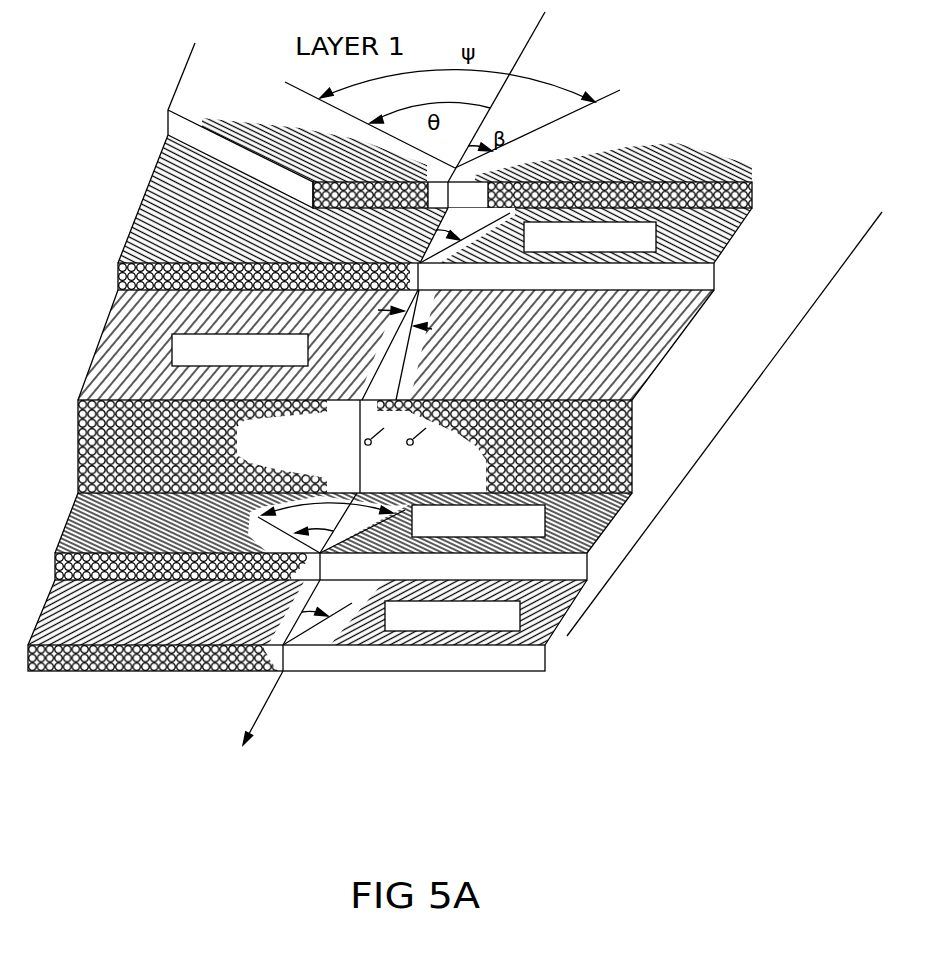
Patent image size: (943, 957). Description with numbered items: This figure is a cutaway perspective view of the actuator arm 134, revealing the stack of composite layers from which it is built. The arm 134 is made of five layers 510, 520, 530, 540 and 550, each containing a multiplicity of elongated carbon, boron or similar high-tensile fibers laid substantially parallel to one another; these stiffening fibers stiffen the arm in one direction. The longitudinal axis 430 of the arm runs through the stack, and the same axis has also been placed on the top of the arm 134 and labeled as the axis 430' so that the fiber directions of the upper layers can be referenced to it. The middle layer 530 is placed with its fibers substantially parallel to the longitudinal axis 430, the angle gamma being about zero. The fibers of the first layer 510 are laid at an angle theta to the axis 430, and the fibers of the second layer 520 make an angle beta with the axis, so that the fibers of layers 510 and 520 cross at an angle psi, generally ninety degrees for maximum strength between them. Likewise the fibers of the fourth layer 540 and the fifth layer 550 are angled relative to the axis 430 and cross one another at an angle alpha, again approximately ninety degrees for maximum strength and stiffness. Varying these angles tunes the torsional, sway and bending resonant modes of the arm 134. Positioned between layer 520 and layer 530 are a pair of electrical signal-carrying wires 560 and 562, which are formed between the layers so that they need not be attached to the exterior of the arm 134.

The first layer 510 is at (290, 113).
The second layer 520 is at (610, 291).
The middle layer 530 is at (328, 459).
The fourth layer 540 is at (476, 581).
The fifth layer 550 is at (431, 673).
The signal-carrying wire 560 is at (388, 434).
The signal-carrying wire 562 is at (430, 434).
The longitudinal axis 430 is at (294, 496).
The longitudinal axis (placed on top of arm) 430' is at (551, 97).
The actuator arm 134 is at (668, 497).